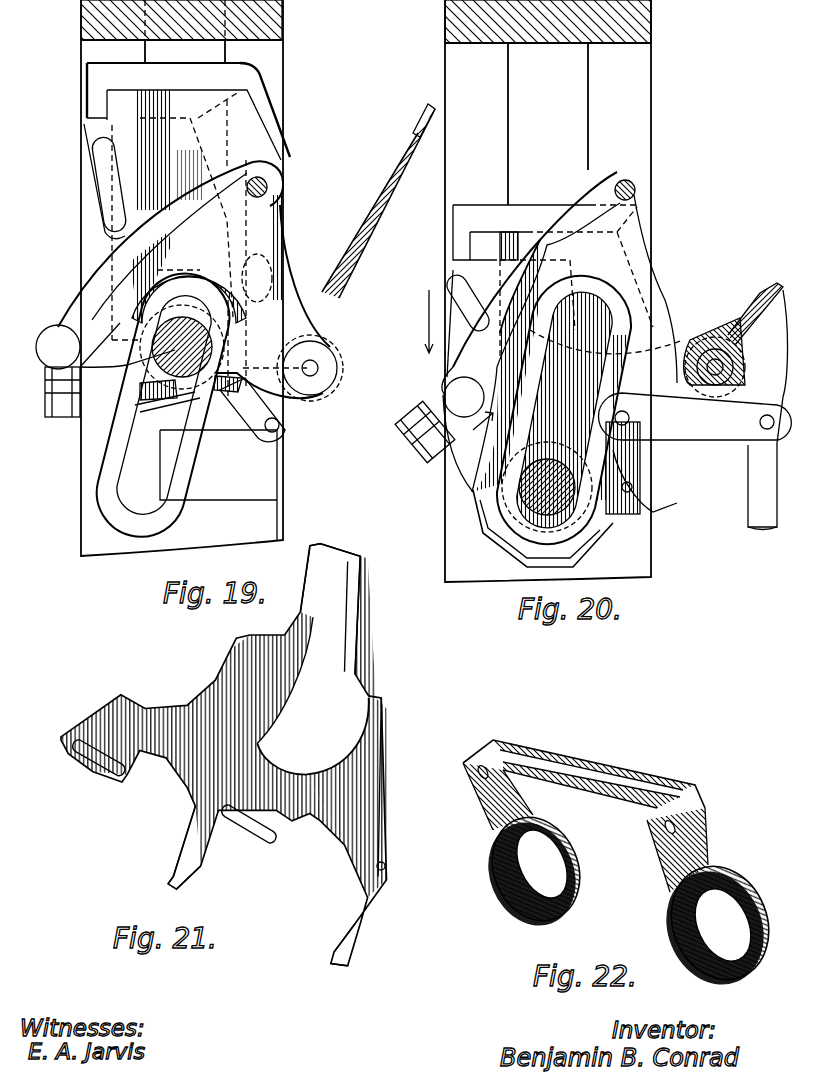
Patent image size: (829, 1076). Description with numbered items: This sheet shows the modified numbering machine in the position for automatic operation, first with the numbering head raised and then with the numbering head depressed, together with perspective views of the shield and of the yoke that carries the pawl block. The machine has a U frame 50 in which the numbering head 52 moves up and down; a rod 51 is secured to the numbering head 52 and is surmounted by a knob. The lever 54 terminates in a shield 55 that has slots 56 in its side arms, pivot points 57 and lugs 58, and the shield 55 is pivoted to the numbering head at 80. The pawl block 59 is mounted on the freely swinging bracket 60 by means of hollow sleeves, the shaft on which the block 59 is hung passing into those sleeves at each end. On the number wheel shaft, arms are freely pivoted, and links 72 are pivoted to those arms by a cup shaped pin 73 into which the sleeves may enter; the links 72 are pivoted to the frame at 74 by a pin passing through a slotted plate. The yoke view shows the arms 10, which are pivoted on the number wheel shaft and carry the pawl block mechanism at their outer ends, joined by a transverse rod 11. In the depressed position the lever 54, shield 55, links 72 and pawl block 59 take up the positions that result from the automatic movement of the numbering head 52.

In FIG. 22, the arms 10 is at (482, 806).
In FIG. 22, the transverse rod 11 is at (556, 752).
In FIG. 19, the U frame 50 is at (283, 512).
In FIG. 20, the U frame 50 is at (640, 572).
In FIG. 19, the rod 51 is at (188, 220).
In FIG. 20, the rod 51 is at (553, 201).
In FIG. 19, the numbering head 52 is at (160, 420).
In FIG. 20, the numbering head 52 is at (588, 322).
In FIG. 19, the lever 54 is at (413, 133).
In FIG. 20, the lever 54 is at (775, 283).
In FIG. 21, the lever 54 is at (325, 602).
In FIG. 19, the shield 55 is at (343, 232).
In FIG. 20, the shield 55 is at (668, 482).
In FIG. 21, the shield 55 is at (330, 735).
In FIG. 19, the slots 56 is at (97, 172).
In FIG. 20, the slots 56 is at (455, 282).
In FIG. 21, the slots 56 is at (102, 760).
In FIG. 21, the pivot points 57 is at (386, 865).
In FIG. 21, the lugs 58 is at (165, 880).
In FIG. 19, the pawl block 59 is at (48, 418).
In FIG. 20, the pawl block 59 is at (405, 430).
In FIG. 22, the bracket 60 is at (620, 777).
In FIG. 19, the links 72 is at (194, 279).
In FIG. 20, the links 72 is at (554, 332).
In FIG. 19, the cup shaped pin 73 is at (60, 325).
In FIG. 20, the cup shaped pin 73 is at (446, 408).
In FIG. 19, the pivot 74 is at (268, 185).
In FIG. 20, the pivot 74 is at (636, 190).
In FIG. 20, the pivot of shield 80 is at (695, 518).